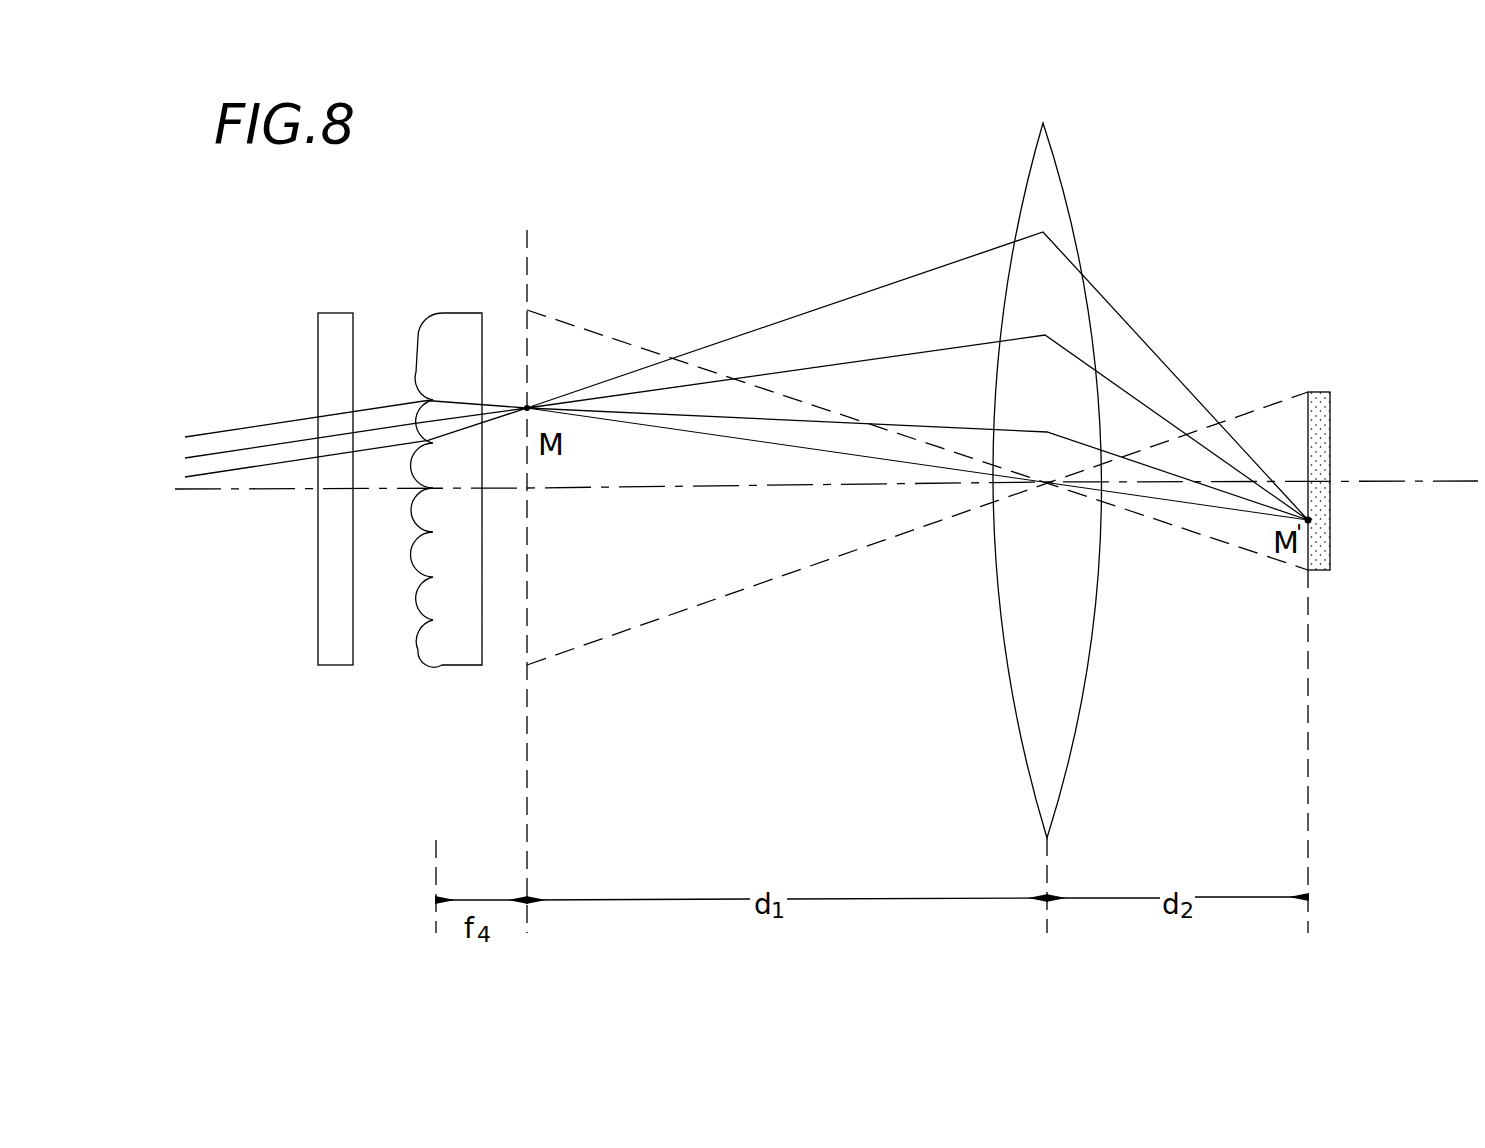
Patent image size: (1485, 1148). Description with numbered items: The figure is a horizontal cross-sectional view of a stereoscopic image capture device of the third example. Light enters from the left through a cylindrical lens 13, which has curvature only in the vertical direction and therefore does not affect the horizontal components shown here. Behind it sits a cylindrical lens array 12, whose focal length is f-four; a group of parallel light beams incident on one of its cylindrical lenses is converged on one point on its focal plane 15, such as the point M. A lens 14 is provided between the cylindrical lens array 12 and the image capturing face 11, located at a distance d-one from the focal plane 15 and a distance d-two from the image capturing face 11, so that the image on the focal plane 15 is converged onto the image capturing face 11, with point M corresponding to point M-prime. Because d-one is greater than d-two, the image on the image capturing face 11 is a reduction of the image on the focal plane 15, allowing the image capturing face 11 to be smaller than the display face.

The image capturing face 11 is at (1317, 397).
The cylindrical lens array 12 is at (457, 335).
The cylindrical lens 13 is at (335, 335).
The lens 14 is at (1043, 188).
The focal plane 15 is at (527, 288).